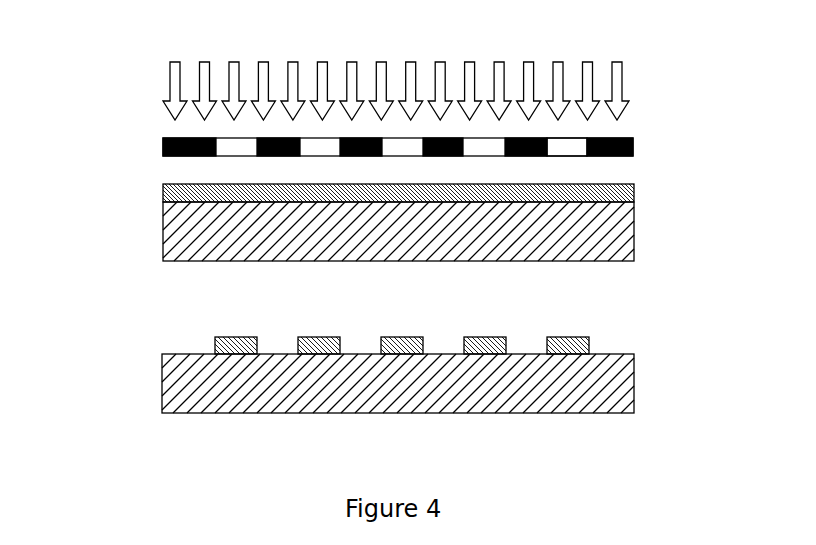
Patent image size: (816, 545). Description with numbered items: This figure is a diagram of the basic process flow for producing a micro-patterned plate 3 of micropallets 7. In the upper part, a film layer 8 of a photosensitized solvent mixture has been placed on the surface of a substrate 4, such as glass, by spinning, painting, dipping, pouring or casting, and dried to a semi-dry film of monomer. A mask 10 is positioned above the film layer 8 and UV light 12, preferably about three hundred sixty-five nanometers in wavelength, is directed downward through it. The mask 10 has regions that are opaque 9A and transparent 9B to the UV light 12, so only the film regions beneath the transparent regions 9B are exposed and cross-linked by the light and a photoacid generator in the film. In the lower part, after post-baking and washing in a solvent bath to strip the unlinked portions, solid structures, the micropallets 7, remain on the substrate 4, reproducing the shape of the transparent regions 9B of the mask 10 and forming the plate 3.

The UV light 12 is at (628, 88).
The mask 10 is at (384, 150).
The opaque regions 9A is at (198, 138).
The transparent regions 9B is at (573, 147).
The film layer 8 is at (163, 187).
The substrate 4 is at (163, 225).
The micropallets 7 is at (213, 342).
The plate 3 is at (366, 318).